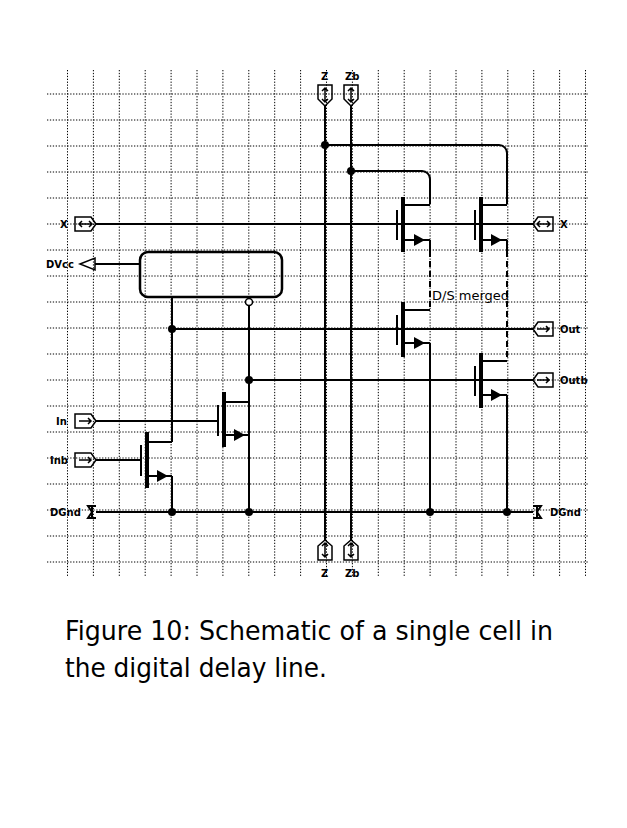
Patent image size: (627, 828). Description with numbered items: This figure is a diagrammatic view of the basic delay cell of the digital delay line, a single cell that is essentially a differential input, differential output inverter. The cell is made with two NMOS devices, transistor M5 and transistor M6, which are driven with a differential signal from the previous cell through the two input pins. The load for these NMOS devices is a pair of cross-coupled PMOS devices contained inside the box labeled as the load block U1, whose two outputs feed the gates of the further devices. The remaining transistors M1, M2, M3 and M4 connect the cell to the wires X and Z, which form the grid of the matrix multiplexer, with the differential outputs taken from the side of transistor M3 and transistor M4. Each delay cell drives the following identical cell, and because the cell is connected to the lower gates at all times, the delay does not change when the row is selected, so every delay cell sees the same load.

The logic cell U1 is at (211, 274).
The transistor M1 is at (404, 224).
The transistor M2 is at (481, 224).
The transistor M3 is at (404, 329).
The transistor M4 is at (481, 380).
The transistor M5 is at (223, 419).
The transistor M6 is at (146, 460).